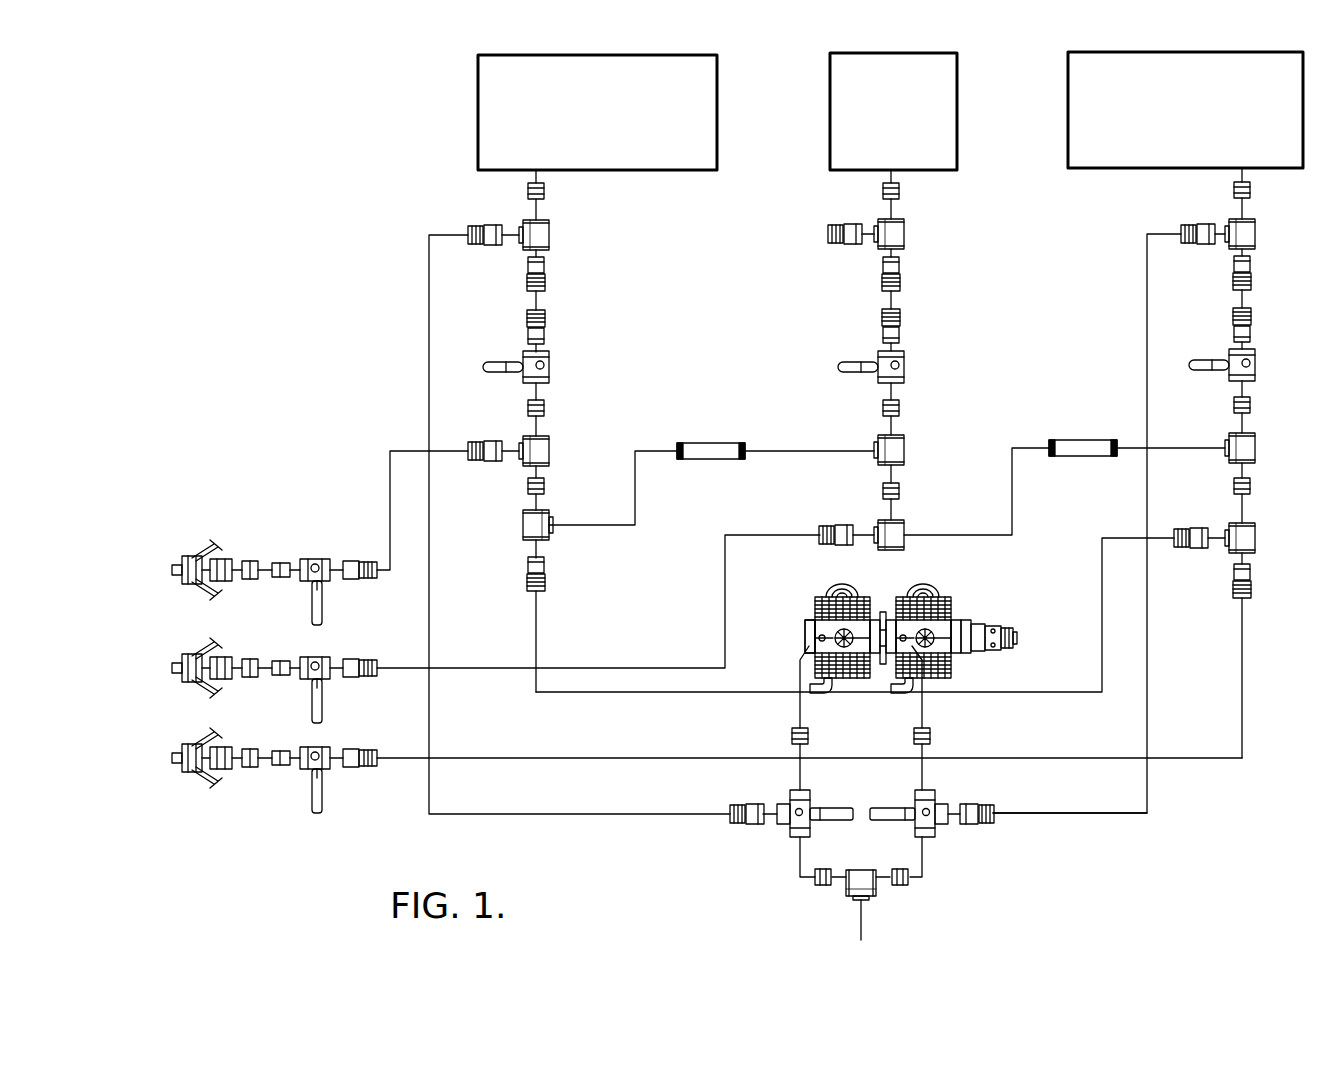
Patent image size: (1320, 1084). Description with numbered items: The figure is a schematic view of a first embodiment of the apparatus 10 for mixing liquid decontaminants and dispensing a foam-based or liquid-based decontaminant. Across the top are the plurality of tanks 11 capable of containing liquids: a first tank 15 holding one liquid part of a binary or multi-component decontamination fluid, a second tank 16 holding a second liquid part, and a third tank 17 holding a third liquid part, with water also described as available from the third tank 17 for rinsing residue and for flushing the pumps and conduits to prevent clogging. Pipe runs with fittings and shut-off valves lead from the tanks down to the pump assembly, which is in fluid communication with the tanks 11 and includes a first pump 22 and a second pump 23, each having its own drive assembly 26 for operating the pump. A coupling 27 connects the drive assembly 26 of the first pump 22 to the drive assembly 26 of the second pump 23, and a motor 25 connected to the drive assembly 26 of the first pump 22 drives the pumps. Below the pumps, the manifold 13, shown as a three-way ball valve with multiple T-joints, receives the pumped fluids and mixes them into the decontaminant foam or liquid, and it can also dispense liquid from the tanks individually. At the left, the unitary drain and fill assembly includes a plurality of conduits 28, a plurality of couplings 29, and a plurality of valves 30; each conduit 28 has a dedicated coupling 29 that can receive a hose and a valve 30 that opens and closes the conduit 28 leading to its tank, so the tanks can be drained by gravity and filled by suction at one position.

The apparatus 10 is at (382, 337).
The plurality of tanks 11 is at (458, 94).
The manifold 13 is at (853, 884).
The first tank 15 is at (1208, 128).
The second tank 16 is at (616, 131).
The third tank 17 is at (910, 131).
The first pump 22 is at (951, 607).
The second pump 23 is at (822, 601).
The motor 25 is at (1014, 640).
The drive assembly 26 is at (876, 612).
The coupling 27 is at (884, 662).
The conduit 28 is at (388, 516).
The coupling 29 is at (185, 748).
The valve 30 is at (312, 582).